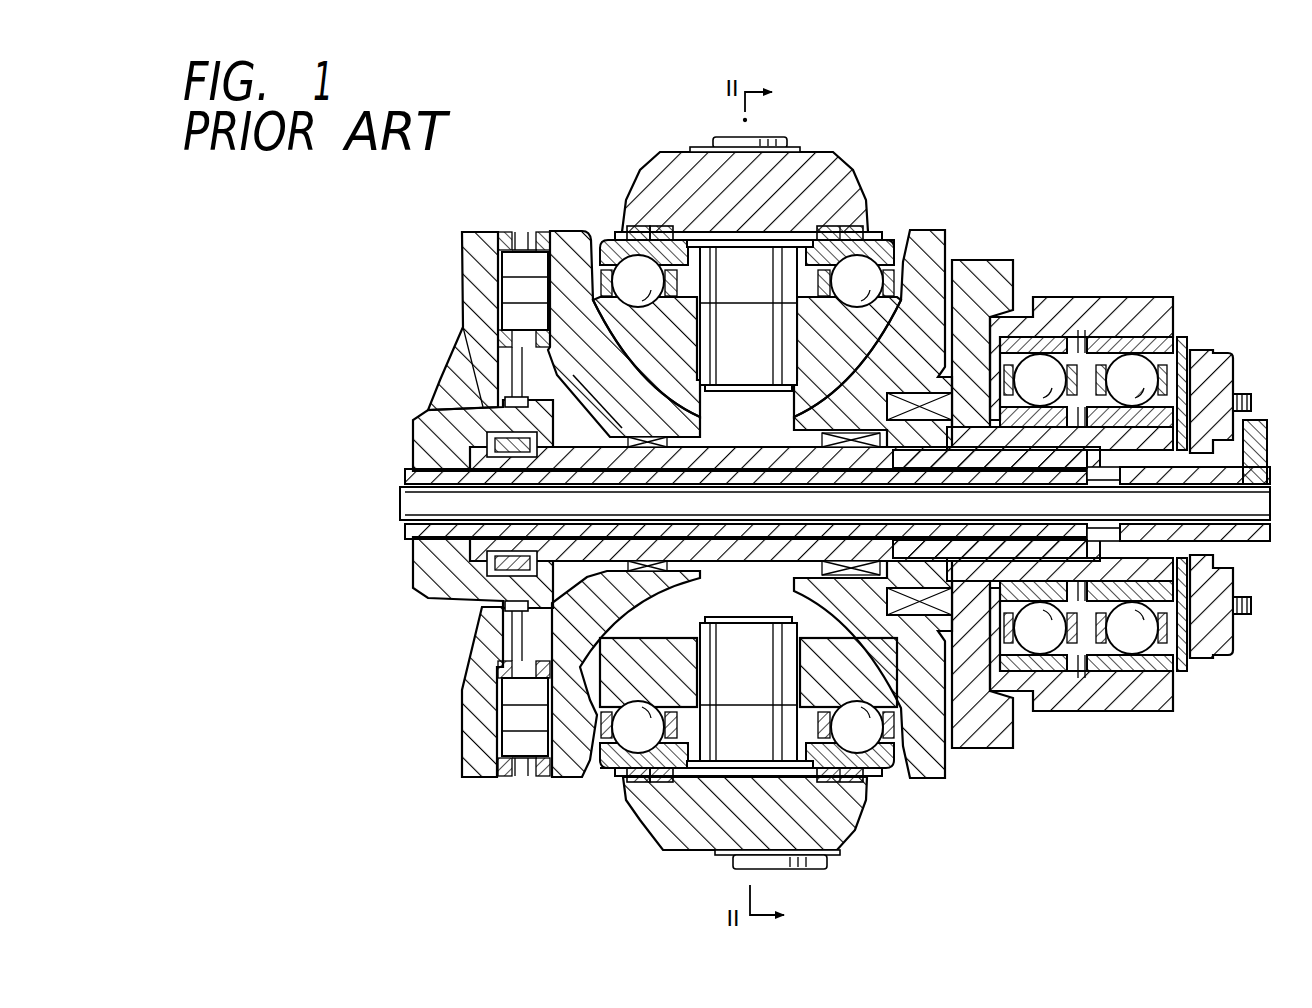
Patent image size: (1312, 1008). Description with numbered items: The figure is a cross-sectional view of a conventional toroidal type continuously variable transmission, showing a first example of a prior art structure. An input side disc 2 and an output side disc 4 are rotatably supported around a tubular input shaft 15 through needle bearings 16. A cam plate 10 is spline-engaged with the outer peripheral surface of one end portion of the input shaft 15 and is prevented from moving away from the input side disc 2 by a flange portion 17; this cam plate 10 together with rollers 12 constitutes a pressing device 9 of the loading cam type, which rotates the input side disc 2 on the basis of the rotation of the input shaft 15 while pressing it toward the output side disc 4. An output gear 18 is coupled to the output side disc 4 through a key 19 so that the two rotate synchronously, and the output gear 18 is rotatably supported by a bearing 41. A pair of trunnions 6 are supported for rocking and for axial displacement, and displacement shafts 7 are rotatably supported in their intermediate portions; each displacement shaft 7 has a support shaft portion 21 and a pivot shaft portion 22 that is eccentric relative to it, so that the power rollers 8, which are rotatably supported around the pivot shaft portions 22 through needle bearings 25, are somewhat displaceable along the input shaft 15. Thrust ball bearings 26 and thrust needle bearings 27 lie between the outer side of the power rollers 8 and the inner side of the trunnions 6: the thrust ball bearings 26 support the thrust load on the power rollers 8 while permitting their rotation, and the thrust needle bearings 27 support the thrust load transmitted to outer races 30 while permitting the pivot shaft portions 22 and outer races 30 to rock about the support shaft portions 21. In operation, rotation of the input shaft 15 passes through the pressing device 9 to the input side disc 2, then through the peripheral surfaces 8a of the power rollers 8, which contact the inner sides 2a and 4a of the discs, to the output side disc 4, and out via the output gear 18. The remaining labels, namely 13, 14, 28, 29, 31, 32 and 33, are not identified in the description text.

The input side disc 2 is at (556, 233).
The inner side of the input side disc 2a is at (697, 409).
The output side disc 4 is at (950, 230).
The inner side of the output side disc 4a is at (798, 402).
The trunnion 6 is at (808, 160).
The displacement shaft 7 is at (777, 246).
The power roller 8 is at (643, 662).
The peripheral surface of the power roller 8a is at (905, 700).
The pressing device 9 is at (460, 693).
The cam plate 10 is at (470, 780).
The roller 12 is at (517, 750).
The upper ring housing 13 is at (472, 246).
The magnet coil 14 is at (540, 232).
The input shaft 15 is at (1262, 478).
The needle bearing 16 is at (698, 445).
The flange portion 17 is at (430, 412).
The output gear 18 is at (1005, 262).
The key 19 is at (913, 422).
The support shaft portion 21 is at (727, 140).
The pivot shaft portion 22 is at (730, 318).
The needle bearing 25 is at (738, 656).
The thrust ball bearing 26 is at (880, 245).
The thrust needle bearing 27 is at (872, 236).
The right thrust bearing 28 is at (895, 278).
The lower left thrust bearing 29 is at (607, 740).
The outer race 30 is at (612, 246).
The lock nut 31 is at (658, 232).
The lower lock nut 32 is at (640, 780).
The adjusting nut 33 is at (638, 236).
The bearing 41 is at (1137, 365).